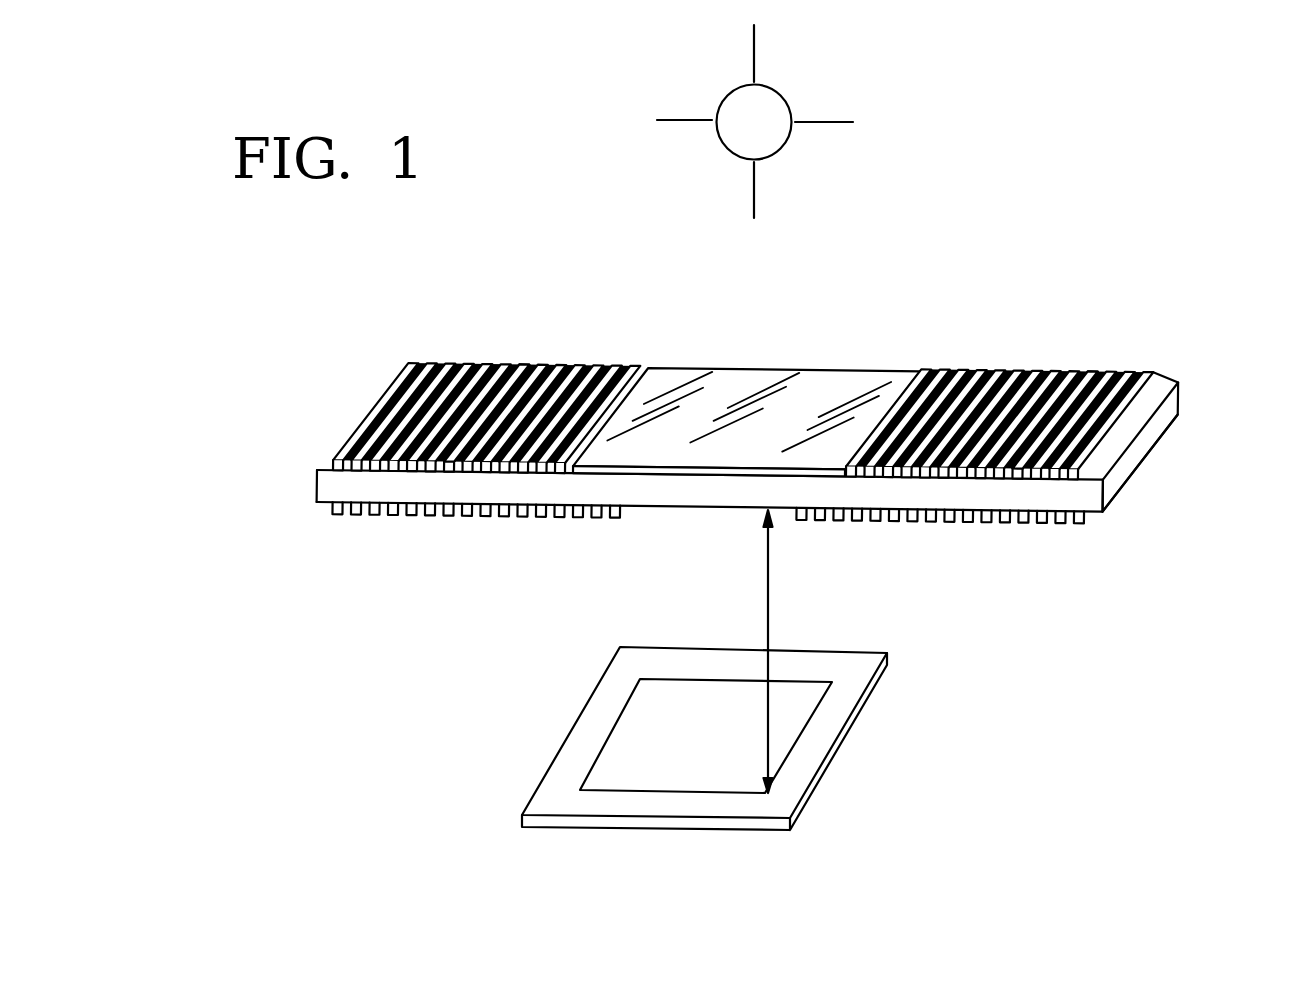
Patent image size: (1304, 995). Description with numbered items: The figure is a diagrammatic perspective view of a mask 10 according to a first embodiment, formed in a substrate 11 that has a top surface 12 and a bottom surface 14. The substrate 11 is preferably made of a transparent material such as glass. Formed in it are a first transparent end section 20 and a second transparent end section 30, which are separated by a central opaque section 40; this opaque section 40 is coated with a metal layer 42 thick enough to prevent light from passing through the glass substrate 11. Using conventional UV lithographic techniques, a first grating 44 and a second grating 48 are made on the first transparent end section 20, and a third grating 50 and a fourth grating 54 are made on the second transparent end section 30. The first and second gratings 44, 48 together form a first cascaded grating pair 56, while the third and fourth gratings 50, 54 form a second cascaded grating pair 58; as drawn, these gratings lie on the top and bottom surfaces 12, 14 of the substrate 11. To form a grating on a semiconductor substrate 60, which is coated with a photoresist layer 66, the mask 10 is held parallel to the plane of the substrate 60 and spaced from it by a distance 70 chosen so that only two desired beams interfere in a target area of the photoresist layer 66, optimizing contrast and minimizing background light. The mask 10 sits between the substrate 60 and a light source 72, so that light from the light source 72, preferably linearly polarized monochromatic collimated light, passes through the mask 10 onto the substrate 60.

The mask 10 is at (329, 398).
The substrate 11 is at (1088, 497).
The top surface 12 is at (746, 419).
The bottom surface 14 is at (708, 507).
The first transparent end section 20 is at (486, 352).
The second transparent end section 30 is at (1010, 358).
The central opaque section 40 is at (773, 403).
The metal layer 42 is at (682, 467).
The first grating 44 is at (475, 415).
The second grating 48 is at (456, 532).
The third grating 50 is at (1050, 408).
The fourth grating 54 is at (1000, 532).
The first cascaded grating pair 56 is at (345, 518).
The second cascaded grating pair 58 is at (1068, 520).
The semiconductor substrate 60 is at (752, 711).
The photoresist layer 66 is at (712, 717).
The distance 70 is at (768, 607).
The light source 72 is at (803, 92).